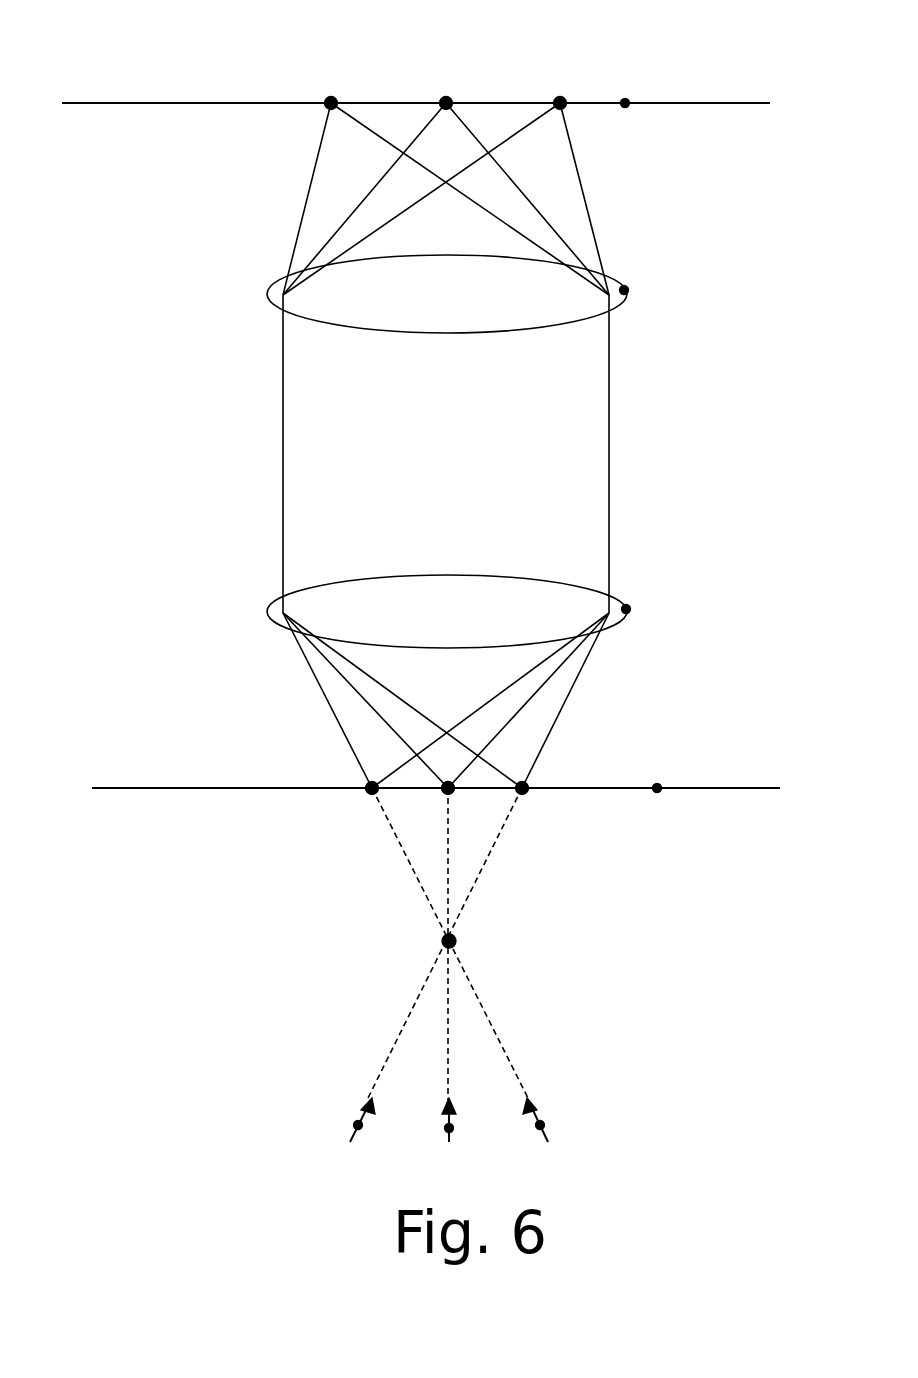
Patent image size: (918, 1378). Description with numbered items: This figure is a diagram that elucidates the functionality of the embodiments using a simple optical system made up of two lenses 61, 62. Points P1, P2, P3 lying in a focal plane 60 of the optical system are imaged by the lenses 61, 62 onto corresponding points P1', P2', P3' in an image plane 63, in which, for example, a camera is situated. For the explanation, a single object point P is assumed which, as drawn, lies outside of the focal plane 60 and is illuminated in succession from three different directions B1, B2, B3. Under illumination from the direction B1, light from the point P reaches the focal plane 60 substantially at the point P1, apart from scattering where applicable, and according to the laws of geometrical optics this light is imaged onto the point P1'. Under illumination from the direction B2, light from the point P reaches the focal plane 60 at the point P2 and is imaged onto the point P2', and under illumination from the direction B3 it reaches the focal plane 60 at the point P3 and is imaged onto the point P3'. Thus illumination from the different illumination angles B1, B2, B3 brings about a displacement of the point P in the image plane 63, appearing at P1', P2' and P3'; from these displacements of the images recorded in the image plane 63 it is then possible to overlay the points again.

The focal plane 60 is at (659, 785).
The lens 61 is at (628, 606).
The lens 62 is at (626, 287).
The image plane 63 is at (627, 100).
The point P is at (455, 938).
The point P1 is at (317, 759).
The point P2 is at (387, 816).
The point P3 is at (575, 767).
The point P1' is at (600, 63).
The point P2' is at (486, 63).
The point P3' is at (371, 63).
The illumination direction B1 is at (543, 1122).
The illumination direction B2 is at (453, 1132).
The illumination direction B3 is at (355, 1122).